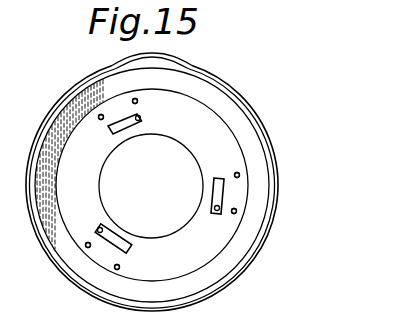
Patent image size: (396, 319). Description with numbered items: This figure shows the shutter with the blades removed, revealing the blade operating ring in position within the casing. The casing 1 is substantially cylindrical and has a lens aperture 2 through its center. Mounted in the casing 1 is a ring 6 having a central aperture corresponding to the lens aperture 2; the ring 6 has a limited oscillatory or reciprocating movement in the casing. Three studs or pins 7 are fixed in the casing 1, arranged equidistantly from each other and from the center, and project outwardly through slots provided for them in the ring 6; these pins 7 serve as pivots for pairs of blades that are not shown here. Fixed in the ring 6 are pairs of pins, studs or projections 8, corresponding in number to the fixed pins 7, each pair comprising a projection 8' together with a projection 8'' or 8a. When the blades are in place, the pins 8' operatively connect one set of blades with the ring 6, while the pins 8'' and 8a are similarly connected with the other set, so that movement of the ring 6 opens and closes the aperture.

The casing 1 is at (268, 190).
The lens aperture 2 is at (151, 186).
The ring 6 is at (209, 126).
The studs or pins 7 is at (142, 118).
The pairs of pins, studs or projections 8 is at (163, 184).
The pins 8' is at (186, 159).
The pins or studs 8'' is at (113, 192).
The pins or studs 8a is at (239, 174).